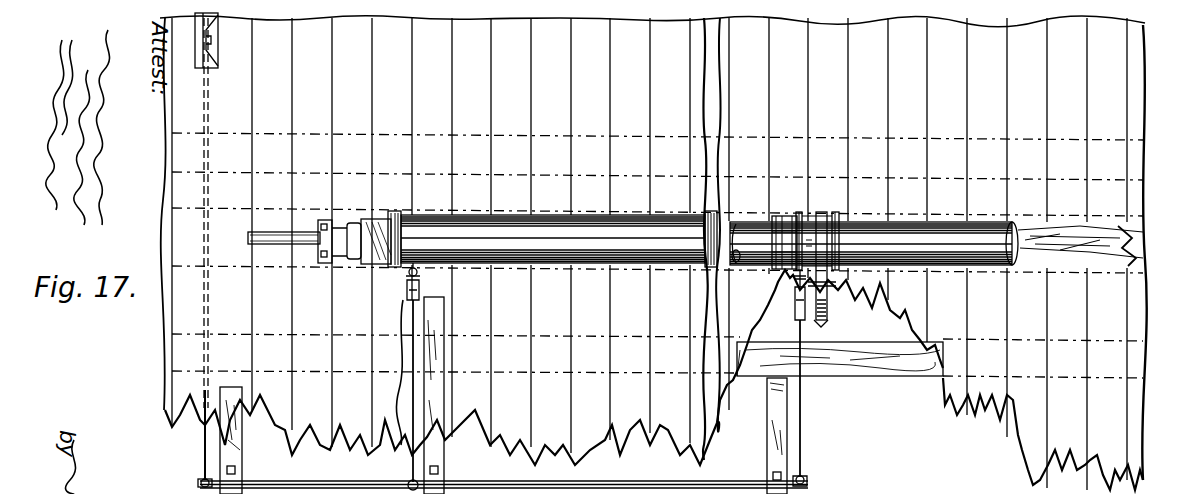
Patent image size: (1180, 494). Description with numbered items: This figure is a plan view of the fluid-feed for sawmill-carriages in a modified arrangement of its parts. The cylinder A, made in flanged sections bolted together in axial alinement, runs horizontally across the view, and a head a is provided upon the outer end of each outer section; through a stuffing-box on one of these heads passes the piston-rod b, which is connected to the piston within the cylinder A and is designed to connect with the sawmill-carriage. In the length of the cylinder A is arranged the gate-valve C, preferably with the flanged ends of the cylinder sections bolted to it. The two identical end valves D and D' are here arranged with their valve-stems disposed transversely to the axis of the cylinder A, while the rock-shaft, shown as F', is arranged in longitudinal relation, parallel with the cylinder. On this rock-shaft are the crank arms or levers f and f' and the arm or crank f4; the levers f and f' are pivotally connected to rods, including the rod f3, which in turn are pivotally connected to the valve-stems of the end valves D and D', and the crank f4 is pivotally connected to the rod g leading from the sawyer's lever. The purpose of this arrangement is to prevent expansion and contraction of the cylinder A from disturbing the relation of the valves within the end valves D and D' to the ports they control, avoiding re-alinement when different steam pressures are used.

The head a is at (209, 40).
The piston-rod b is at (283, 242).
The end valve D is at (413, 212).
The cylinder A is at (530, 245).
The end valve D' is at (806, 219).
The gate-valve C is at (845, 240).
The rod f3 is at (404, 352).
The arm or crank f4 is at (802, 400).
The lever f is at (395, 479).
The lever f' is at (819, 479).
The frame bar F' is at (504, 395).
The rod g is at (204, 443).